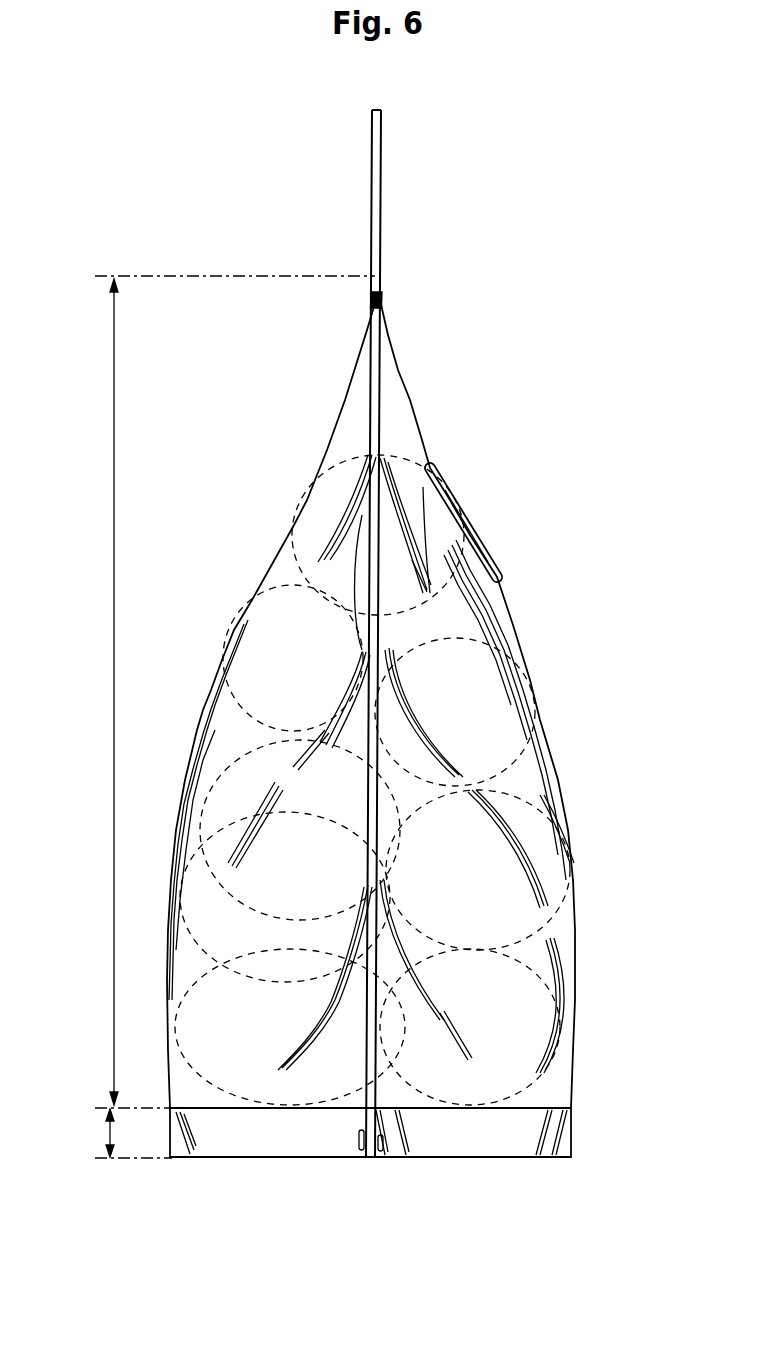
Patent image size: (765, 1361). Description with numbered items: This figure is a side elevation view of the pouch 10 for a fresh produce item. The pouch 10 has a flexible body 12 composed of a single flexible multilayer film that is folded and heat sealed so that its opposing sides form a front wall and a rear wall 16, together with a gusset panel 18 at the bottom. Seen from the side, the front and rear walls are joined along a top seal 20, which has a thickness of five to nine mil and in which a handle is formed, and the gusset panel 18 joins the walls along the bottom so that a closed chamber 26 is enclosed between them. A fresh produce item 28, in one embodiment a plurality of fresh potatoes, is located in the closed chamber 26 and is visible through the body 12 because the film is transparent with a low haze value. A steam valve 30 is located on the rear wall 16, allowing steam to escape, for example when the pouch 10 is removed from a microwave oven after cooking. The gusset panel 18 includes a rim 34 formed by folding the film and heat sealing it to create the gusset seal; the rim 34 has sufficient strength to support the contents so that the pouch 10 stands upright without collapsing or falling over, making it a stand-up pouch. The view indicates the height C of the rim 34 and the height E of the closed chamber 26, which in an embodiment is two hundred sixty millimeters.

The pouch 10 is at (492, 245).
The flexible body 12 is at (565, 645).
The rear wall 16 is at (576, 945).
The gusset panel 18 is at (168, 936).
The top seal 20 is at (383, 135).
The closed chamber 26 is at (252, 672).
The fresh produce item 28 is at (524, 775).
The steam valve 30 is at (448, 478).
The rim 34 is at (181, 1146).
The height of the closed chamber E is at (114, 583).
The height of the rim C is at (110, 1130).